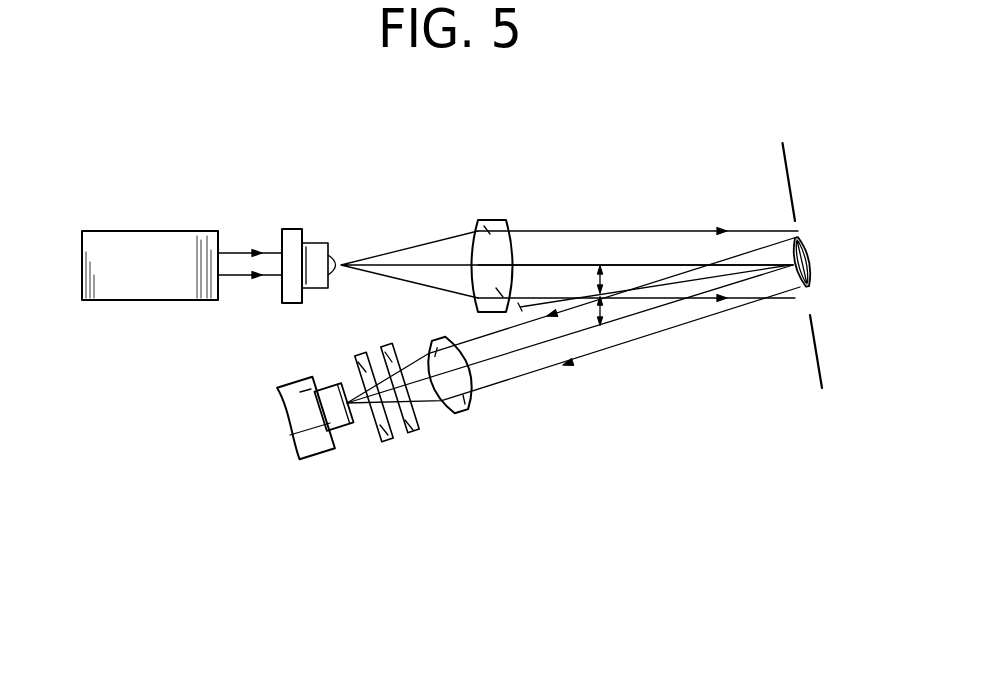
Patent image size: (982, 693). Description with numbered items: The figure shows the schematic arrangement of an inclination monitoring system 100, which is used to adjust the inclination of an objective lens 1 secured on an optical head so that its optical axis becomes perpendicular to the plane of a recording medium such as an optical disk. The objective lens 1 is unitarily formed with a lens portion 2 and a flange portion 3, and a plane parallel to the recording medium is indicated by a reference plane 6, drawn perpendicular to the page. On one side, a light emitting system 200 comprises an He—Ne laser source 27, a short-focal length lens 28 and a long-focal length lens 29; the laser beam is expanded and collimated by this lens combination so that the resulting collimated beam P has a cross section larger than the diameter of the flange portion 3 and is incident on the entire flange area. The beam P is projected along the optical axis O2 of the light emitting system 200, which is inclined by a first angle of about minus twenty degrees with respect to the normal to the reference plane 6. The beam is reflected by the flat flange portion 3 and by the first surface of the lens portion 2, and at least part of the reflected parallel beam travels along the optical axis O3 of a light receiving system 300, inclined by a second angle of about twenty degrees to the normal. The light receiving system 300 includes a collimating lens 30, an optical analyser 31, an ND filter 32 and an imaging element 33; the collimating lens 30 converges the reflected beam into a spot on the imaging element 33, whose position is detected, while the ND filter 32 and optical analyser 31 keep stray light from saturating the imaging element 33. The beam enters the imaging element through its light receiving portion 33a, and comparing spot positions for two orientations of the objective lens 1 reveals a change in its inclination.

The inclination monitoring system 100 is at (134, 440).
The He—Ne laser source 27 is at (181, 202).
The short-focal length lens 28 is at (318, 245).
The light emitting system 200 is at (384, 236).
The long-focal length lens 29 is at (487, 228).
The expanded and collimated beam P is at (620, 230).
The optical axis of the light emitting system O2 is at (665, 263).
The reference plane 6 is at (782, 170).
The objective lens 1 is at (830, 262).
The lens portion 2 is at (805, 246).
The flange portion 3 is at (810, 290).
The light receiving system 300 is at (588, 372).
The optical axis of the light receiving system O3 is at (663, 308).
The collimating lens 30 is at (467, 413).
The ND filter 32 is at (377, 437).
The optical analyser 31 is at (410, 433).
The imaging element 33 is at (315, 417).
The light receiving aperture 33a is at (342, 390).